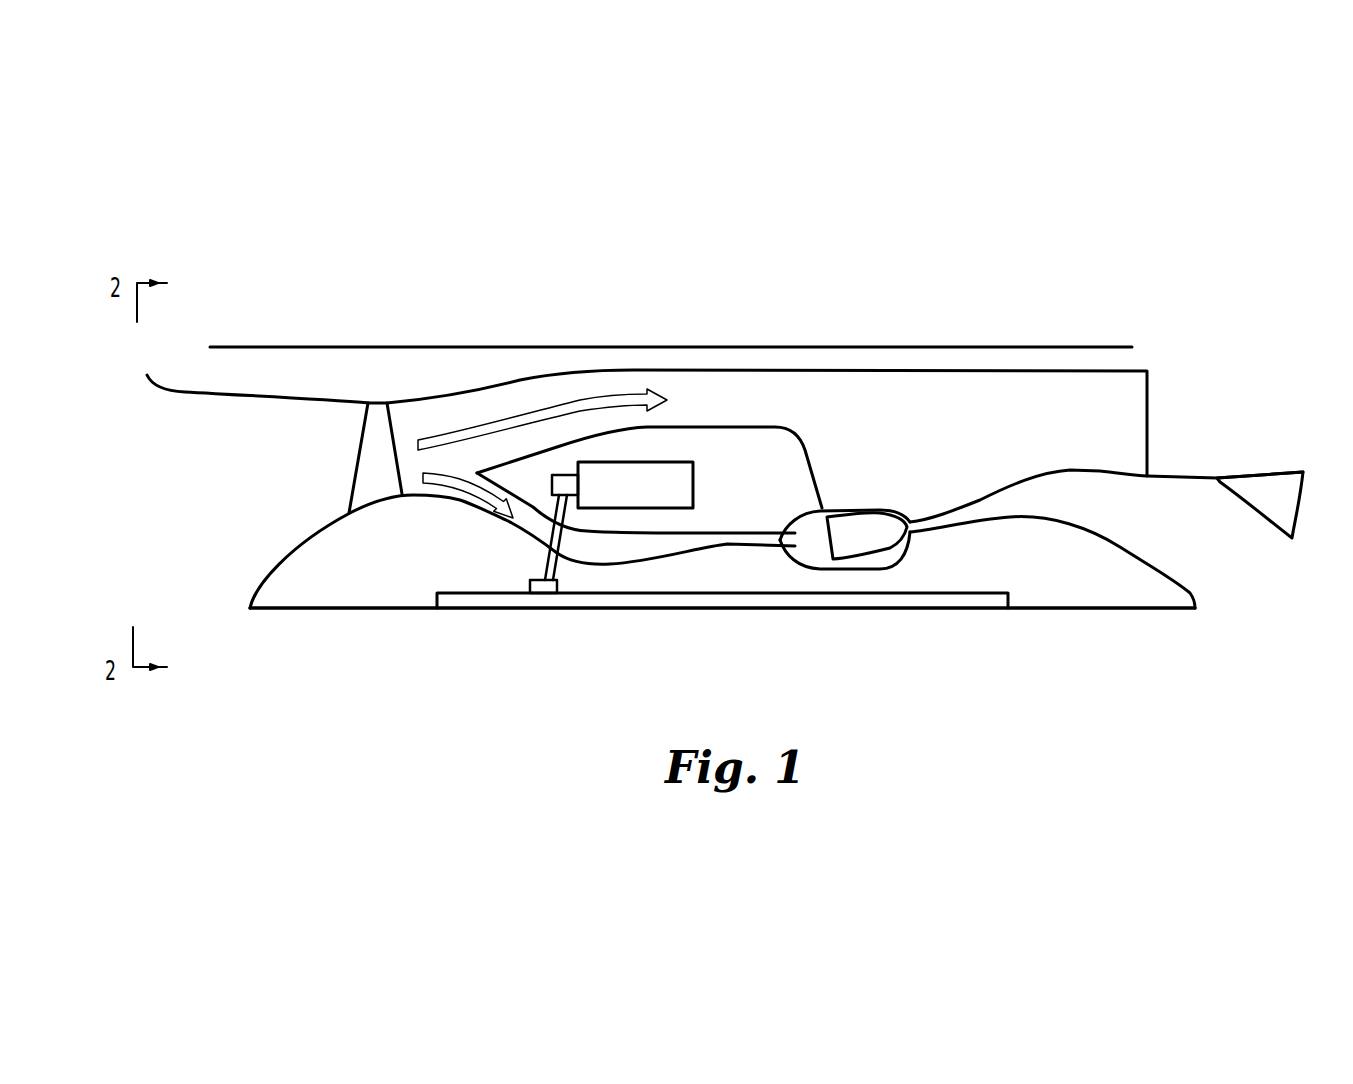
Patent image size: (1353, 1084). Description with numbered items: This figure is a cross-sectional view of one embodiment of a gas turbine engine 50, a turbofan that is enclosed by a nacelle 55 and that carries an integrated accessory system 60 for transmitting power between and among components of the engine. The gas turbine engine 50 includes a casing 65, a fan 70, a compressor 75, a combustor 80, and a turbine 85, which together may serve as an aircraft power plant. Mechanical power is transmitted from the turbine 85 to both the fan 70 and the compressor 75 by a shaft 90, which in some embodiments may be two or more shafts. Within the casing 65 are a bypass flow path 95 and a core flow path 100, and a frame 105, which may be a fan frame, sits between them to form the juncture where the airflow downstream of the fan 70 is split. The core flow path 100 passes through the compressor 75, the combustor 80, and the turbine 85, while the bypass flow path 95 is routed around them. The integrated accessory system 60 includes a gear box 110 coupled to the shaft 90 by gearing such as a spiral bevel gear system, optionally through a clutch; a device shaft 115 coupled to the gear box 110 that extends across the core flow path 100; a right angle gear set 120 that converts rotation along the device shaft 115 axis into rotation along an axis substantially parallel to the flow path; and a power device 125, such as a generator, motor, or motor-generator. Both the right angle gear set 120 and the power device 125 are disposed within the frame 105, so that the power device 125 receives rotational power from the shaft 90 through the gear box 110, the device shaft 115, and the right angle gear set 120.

The gas turbine engine 50 is at (720, 630).
The nacelle 55 is at (1028, 347).
The integrated accessory system 60 is at (572, 617).
The casing 65 is at (1083, 371).
The fan 70 is at (373, 418).
The compressor 75 is at (593, 572).
The combustor 80 is at (848, 577).
The turbine 85 is at (963, 532).
The shaft 90 is at (923, 602).
The bypass flow path 95 is at (528, 413).
The core flow path 100 is at (453, 497).
The frame 105 is at (743, 443).
The gear box 110 is at (530, 593).
The device shaft 115 is at (540, 528).
The right angle gear set 120 is at (563, 473).
The power device 125 is at (653, 475).